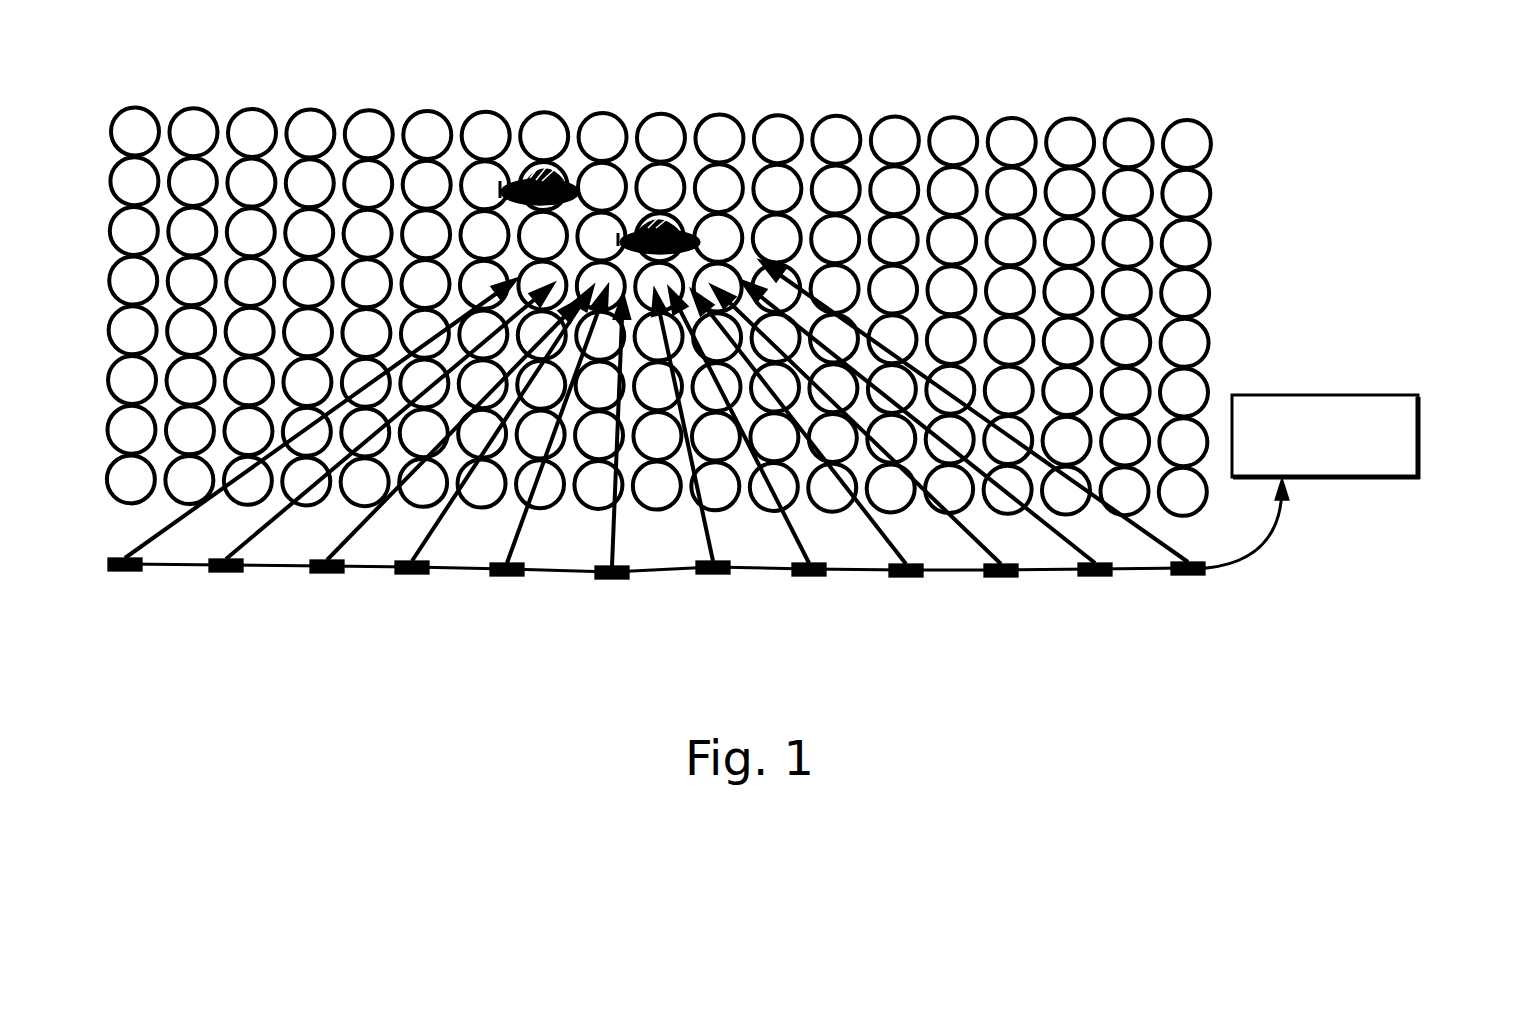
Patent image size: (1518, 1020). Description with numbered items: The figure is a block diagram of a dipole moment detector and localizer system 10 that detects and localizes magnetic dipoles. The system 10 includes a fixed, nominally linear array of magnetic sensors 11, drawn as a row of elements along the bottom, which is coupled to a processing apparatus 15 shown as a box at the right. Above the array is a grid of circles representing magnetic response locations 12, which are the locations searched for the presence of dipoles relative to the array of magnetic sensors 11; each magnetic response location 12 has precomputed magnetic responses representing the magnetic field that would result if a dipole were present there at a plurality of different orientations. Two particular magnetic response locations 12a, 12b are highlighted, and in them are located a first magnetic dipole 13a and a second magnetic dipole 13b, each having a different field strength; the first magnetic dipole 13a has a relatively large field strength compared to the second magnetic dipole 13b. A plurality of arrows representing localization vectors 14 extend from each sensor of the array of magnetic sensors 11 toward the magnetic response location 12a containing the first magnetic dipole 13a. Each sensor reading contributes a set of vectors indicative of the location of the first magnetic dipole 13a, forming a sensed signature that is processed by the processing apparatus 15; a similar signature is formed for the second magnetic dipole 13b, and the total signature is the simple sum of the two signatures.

The dipole moment detector and localizer system 10 is at (1340, 722).
The array of magnetic sensors 11 is at (1265, 592).
The magnetic response locations 12 is at (1200, 237).
The magnetic response location 12a is at (647, 213).
The magnetic response location 12b is at (522, 173).
The first magnetic dipole 13a is at (682, 233).
The second magnetic dipole 13b is at (563, 162).
The localization vectors 14 is at (700, 530).
The processing apparatus 15 is at (1418, 430).